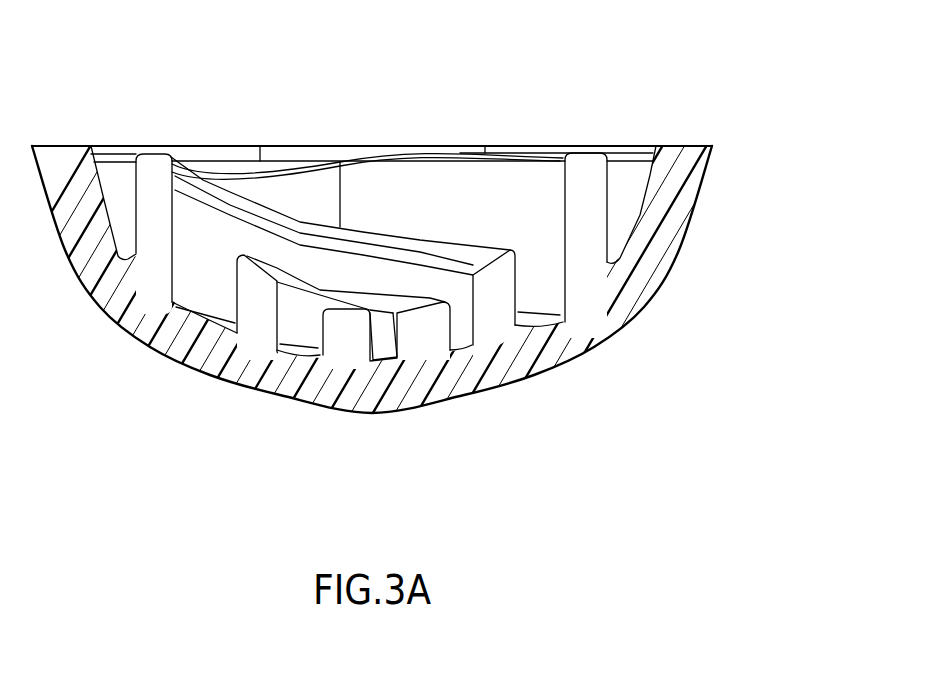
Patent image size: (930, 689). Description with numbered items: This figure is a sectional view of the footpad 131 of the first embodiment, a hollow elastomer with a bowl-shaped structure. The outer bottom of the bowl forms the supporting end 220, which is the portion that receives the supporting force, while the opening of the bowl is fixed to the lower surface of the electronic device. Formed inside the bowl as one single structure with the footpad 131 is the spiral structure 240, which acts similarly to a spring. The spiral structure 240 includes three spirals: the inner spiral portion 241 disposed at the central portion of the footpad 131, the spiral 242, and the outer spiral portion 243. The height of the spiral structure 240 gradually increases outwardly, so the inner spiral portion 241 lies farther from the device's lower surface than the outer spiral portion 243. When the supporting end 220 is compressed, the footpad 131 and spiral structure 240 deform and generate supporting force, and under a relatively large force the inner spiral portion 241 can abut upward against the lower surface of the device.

The footpad 131 is at (187, 108).
The supporting end 220 is at (355, 414).
The spiral structure 240 is at (595, 73).
The inner spiral portion 241 is at (417, 327).
The spiral 242 is at (500, 290).
The outer spiral portion 243 is at (587, 182).